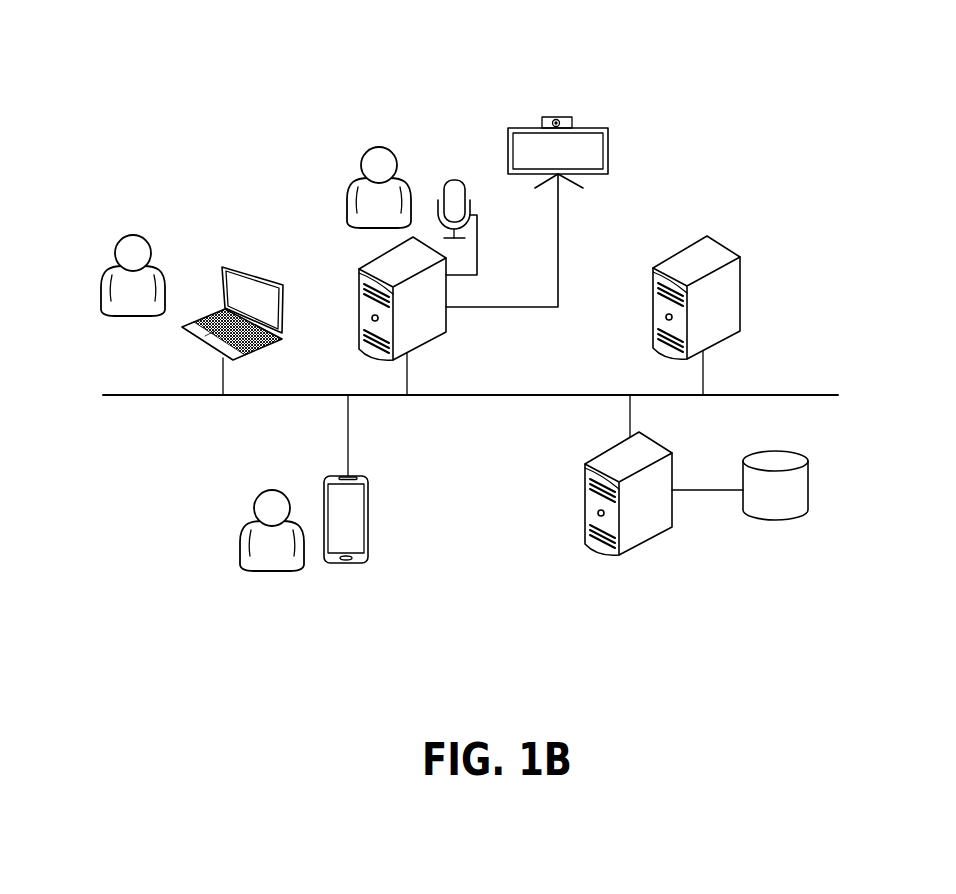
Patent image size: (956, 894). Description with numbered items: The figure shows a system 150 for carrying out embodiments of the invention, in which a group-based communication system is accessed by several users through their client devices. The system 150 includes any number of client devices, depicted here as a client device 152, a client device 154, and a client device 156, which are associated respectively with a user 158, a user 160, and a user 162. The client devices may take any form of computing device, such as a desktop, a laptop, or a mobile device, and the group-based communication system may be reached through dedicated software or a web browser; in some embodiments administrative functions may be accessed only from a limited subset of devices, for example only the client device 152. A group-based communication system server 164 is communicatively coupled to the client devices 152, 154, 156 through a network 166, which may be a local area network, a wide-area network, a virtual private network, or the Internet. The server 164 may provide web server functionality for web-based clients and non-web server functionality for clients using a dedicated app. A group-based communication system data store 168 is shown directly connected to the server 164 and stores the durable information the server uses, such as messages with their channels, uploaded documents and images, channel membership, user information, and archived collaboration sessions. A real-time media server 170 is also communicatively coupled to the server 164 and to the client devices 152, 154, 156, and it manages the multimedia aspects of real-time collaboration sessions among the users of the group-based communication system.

The system 150 is at (153, 78).
The client device 152 is at (243, 272).
The client device 154 is at (450, 322).
The client device 156 is at (372, 507).
The user 158 is at (142, 233).
The user 160 is at (384, 148).
The user 162 is at (258, 573).
The group-based communication system server 164 is at (639, 550).
The network 166 is at (138, 397).
The group-based communication system data store 168 is at (770, 523).
The real-time media server 170 is at (720, 243).